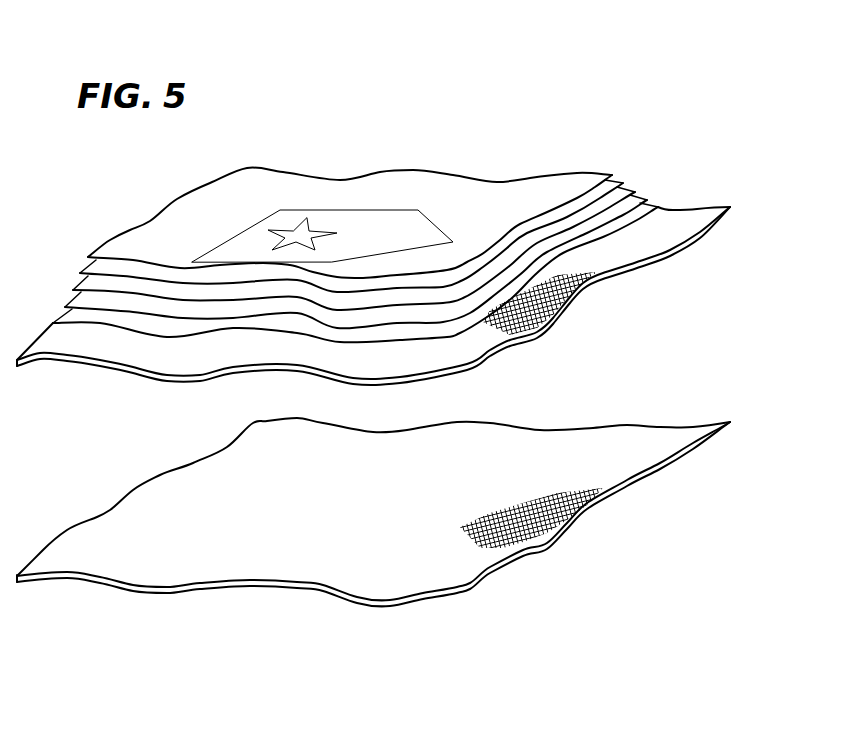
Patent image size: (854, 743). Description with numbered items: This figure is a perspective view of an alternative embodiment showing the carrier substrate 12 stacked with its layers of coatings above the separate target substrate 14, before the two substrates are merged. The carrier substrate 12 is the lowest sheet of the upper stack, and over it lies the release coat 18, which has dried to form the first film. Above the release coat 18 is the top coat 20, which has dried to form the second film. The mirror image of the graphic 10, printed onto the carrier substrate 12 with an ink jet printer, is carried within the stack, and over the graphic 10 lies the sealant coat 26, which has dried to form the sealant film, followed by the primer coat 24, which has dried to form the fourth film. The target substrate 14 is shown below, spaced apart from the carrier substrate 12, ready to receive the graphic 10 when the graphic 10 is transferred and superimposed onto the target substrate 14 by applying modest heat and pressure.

The primer coat 24 is at (188, 210).
The sealant coat 26 is at (620, 177).
The graphic 10 is at (627, 185).
The top coat 20 is at (643, 200).
The release coat 18 is at (658, 207).
The carrier substrate 12 is at (688, 220).
The target substrate 14 is at (672, 440).